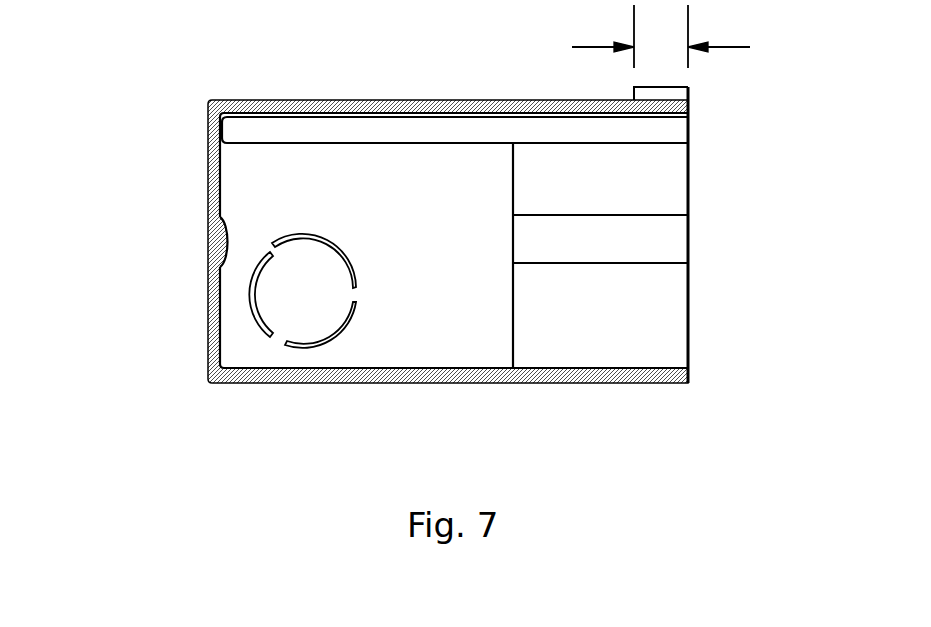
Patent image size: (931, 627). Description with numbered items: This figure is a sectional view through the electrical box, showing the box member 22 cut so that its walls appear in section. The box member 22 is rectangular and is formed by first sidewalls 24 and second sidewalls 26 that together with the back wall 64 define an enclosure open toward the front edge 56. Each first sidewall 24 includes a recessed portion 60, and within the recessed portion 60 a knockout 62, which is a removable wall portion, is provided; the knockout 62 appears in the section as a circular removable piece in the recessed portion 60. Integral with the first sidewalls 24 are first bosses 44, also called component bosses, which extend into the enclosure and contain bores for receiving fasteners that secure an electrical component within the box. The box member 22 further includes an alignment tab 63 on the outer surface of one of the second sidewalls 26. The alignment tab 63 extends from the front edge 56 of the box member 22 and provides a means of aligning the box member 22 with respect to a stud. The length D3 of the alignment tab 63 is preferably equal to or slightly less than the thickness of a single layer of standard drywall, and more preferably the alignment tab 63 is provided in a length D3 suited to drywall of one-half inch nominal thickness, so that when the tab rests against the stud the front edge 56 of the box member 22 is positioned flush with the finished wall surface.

The box member 22 is at (178, 97).
The second sidewalls 26 is at (297, 107).
The recessed portion 60 is at (255, 182).
The back wall 64 is at (213, 307).
The first sidewalls 24 is at (450, 340).
The front edge 56 is at (690, 238).
The first bosses 44 is at (609, 254).
The alignment tab 63 is at (688, 91).
The knockout 62 is at (315, 305).
The length of the alignment tab D3 is at (679, 36).